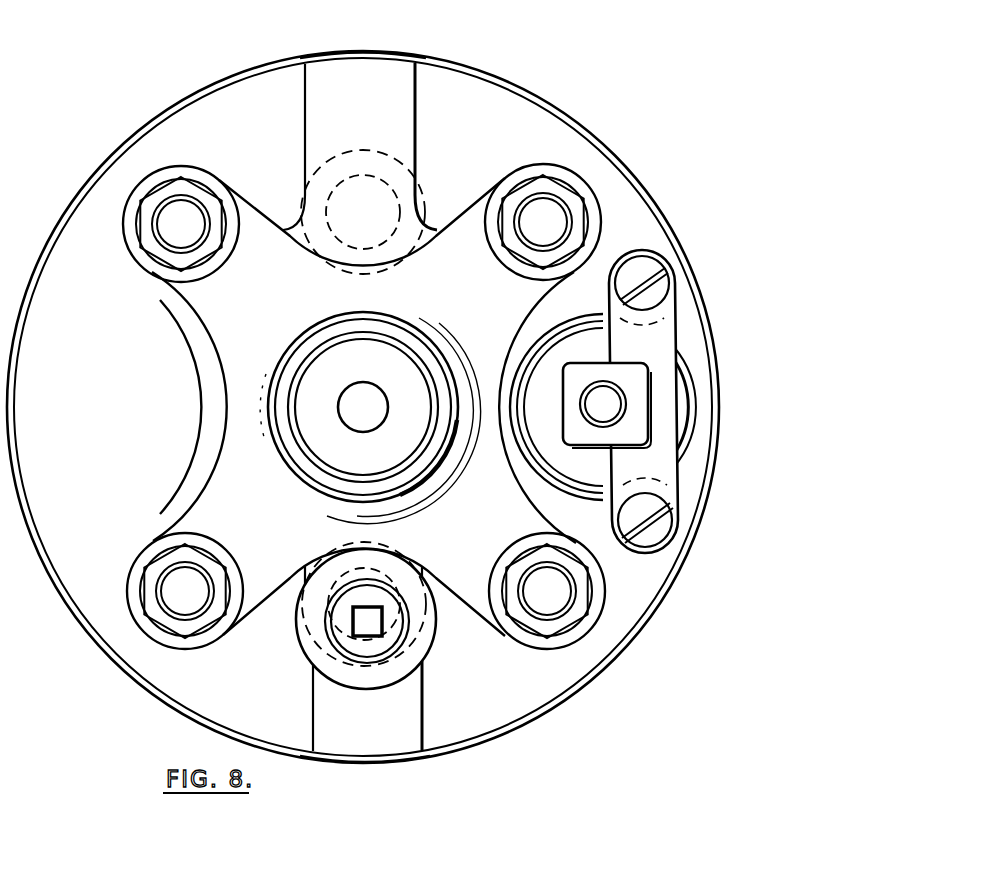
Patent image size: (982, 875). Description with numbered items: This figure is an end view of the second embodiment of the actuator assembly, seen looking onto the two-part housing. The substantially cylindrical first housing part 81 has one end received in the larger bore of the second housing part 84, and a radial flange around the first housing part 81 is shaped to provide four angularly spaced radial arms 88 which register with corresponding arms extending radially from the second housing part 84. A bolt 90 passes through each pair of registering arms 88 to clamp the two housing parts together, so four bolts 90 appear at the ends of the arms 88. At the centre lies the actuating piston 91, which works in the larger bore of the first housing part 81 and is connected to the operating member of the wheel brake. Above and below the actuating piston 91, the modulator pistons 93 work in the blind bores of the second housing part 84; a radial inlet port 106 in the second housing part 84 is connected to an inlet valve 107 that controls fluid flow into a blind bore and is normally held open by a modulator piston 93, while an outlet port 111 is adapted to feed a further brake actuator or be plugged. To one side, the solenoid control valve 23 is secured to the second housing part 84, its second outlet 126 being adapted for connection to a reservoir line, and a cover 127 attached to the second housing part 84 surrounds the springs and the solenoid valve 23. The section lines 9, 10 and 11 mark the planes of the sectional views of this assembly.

The section line 9- 9 is at (357, 40).
The section line 10- 10 is at (398, 407).
The section line 11- 11 is at (367, 543).
The solenoid control valve 23 is at (690, 331).
The first housing part 81 is at (207, 381).
The second housing part 84 is at (426, 131).
The radial arms 88 is at (234, 296).
The bolt 90 is at (173, 230).
The actuating piston 91 is at (349, 458).
The modulator piston 93 is at (357, 183).
The radial inlet port 106 is at (406, 775).
The inlet valve 107 is at (391, 650).
The outlet port 111 is at (381, 39).
The second outlet 126 is at (604, 411).
The cover 127 is at (588, 132).